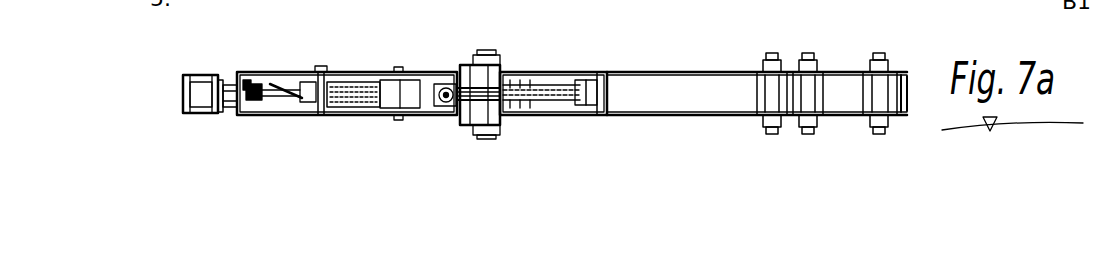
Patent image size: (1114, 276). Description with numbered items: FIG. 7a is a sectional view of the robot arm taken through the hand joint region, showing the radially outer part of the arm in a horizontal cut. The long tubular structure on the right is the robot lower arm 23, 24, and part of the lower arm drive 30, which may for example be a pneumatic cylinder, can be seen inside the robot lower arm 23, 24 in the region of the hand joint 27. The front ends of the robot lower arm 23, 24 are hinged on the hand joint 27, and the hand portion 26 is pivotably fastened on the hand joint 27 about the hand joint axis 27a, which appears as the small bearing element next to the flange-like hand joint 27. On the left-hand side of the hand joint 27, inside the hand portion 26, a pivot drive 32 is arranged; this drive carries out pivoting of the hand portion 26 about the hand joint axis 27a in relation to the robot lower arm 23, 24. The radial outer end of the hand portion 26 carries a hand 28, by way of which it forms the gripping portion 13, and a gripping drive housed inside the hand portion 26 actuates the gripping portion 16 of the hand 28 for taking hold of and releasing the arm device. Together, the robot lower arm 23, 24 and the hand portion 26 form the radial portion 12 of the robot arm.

The radial portion 12 is at (467, 167).
The gripping portion 13 is at (226, 183).
The gripping portion 16 is at (187, 75).
The robot lower arm 23 is at (622, 113).
The robot lower arm 24 is at (757, 93).
The hand portion 26 is at (312, 115).
The hand joint 27 is at (467, 57).
The hand joint axis 27a is at (435, 113).
The hand 28 is at (207, 115).
The lower arm drive 30 is at (515, 87).
The pivot drive 32 is at (365, 88).